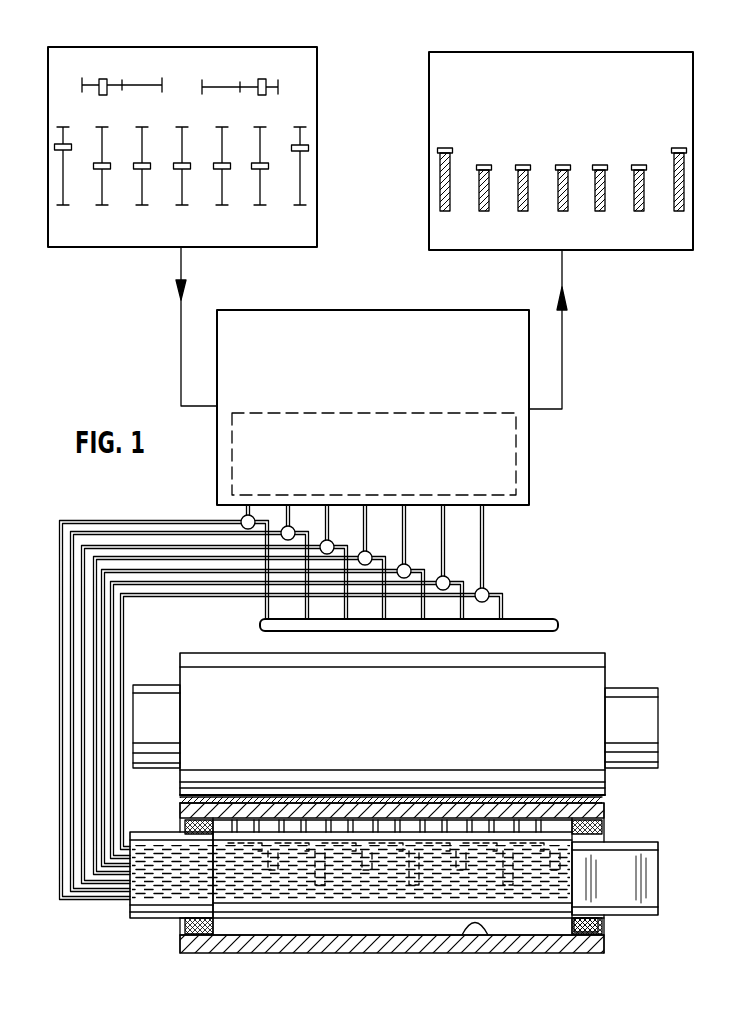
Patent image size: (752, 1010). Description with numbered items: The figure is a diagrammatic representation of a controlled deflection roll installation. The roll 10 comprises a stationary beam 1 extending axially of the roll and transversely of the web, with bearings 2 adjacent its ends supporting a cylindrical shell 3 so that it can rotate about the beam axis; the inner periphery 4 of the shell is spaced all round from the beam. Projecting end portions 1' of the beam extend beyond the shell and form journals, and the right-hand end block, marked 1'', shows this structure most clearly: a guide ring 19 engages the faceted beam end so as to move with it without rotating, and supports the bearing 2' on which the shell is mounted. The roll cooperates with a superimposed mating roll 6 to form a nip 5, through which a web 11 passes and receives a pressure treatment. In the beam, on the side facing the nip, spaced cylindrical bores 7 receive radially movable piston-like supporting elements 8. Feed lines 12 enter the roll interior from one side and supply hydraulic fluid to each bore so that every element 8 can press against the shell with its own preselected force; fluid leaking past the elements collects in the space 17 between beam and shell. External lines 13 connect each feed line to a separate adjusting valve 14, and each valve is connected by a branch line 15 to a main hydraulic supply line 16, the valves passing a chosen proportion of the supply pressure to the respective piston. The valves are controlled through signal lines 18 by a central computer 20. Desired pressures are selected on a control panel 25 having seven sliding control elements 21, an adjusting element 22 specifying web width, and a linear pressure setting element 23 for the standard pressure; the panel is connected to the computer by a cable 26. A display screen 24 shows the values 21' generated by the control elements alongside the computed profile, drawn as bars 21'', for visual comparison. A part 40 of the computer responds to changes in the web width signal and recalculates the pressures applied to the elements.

The stationary beam 1 is at (392, 895).
The projecting end portion 1' is at (170, 901).
The end block of applicator 1'' is at (631, 878).
The bearing 2 is at (199, 903).
The bearing 2' is at (587, 903).
The cylindrical shell 3 is at (515, 946).
The inner periphery 4 is at (468, 936).
The nip 5 is at (172, 800).
The mating roll 6 is at (583, 688).
The cylindrical bores 7 is at (553, 791).
The supporting elements 8 is at (490, 822).
The roll 10 is at (628, 830).
The web 11 is at (603, 790).
The feed lines 12 is at (350, 880).
The external lines 13 is at (110, 647).
The adjusting valves 14 is at (490, 594).
The branch line 15 is at (308, 606).
The main hydraulic supply line 16 is at (530, 622).
The space 17 is at (306, 801).
The signal lines 18 is at (468, 561).
The guide ring 19 is at (604, 923).
The central computer 20 is at (531, 472).
The control elements 21 is at (182, 203).
The values 21' is at (532, 179).
The indicator bar 21'' is at (510, 188).
The adjusting element 22 is at (145, 84).
The linear pressure setting element 23 is at (266, 84).
The display screen 24 is at (429, 214).
The control panel 25 is at (273, 47).
The cable 26 is at (181, 331).
The part 40 is at (238, 462).